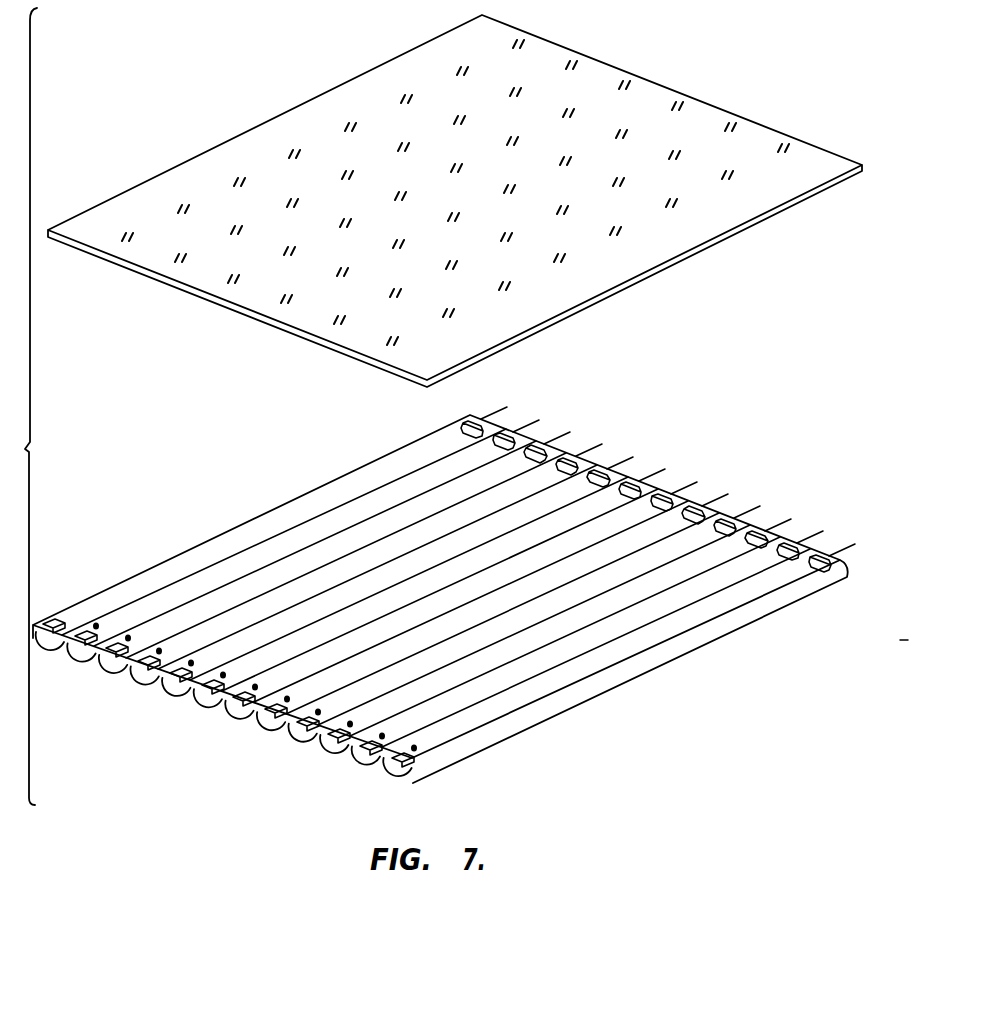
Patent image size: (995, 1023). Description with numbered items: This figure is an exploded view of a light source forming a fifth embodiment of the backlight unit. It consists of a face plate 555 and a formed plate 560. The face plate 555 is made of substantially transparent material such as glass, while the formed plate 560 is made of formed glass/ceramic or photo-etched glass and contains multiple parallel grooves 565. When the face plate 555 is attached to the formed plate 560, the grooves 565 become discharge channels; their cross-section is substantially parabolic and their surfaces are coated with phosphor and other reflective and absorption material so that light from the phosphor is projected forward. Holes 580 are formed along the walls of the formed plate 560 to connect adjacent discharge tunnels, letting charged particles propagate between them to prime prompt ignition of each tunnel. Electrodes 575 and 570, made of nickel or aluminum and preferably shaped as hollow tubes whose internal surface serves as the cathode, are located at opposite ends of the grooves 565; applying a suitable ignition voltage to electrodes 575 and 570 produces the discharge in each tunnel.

The face plate 555 is at (817, 235).
The formed plate 560 is at (453, 595).
The grooves 565 is at (677, 550).
The electrodes 570 is at (600, 472).
The electrodes 575 is at (118, 658).
The holes 580 is at (193, 668).